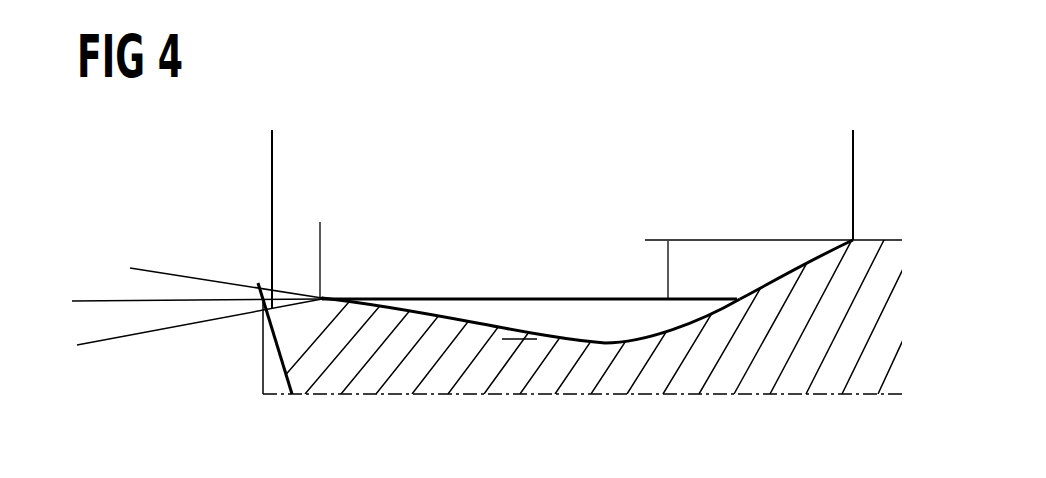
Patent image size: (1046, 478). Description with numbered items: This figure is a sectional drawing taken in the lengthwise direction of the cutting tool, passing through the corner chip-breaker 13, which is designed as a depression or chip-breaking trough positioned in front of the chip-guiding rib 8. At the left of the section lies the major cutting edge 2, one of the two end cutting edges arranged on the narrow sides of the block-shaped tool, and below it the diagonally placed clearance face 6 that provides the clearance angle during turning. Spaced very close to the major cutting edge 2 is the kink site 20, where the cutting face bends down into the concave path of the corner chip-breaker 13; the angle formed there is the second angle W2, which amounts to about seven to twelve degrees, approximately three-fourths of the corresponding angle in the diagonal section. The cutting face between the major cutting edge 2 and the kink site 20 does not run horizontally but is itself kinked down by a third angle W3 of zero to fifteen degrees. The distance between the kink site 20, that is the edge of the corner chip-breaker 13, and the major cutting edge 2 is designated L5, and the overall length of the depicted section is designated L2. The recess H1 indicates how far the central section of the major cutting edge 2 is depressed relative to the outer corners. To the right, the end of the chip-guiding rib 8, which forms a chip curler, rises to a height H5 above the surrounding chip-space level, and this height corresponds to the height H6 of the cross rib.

The major cutting edge 2 is at (265, 296).
The clearance face 6 is at (278, 348).
The chip-guiding rib 8 is at (870, 240).
The corner chip-breaker 13 is at (587, 278).
The kink site 20 is at (322, 298).
The second angle W2 is at (153, 377).
The third angle W3 is at (85, 257).
The length L2 is at (853, 152).
The distance between kink site and major cutting edge L5 is at (240, 235).
The recess H1 is at (515, 340).
The height of chip-guiding rib end H5 is at (713, 243).
The height of cross rib H6 is at (670, 272).